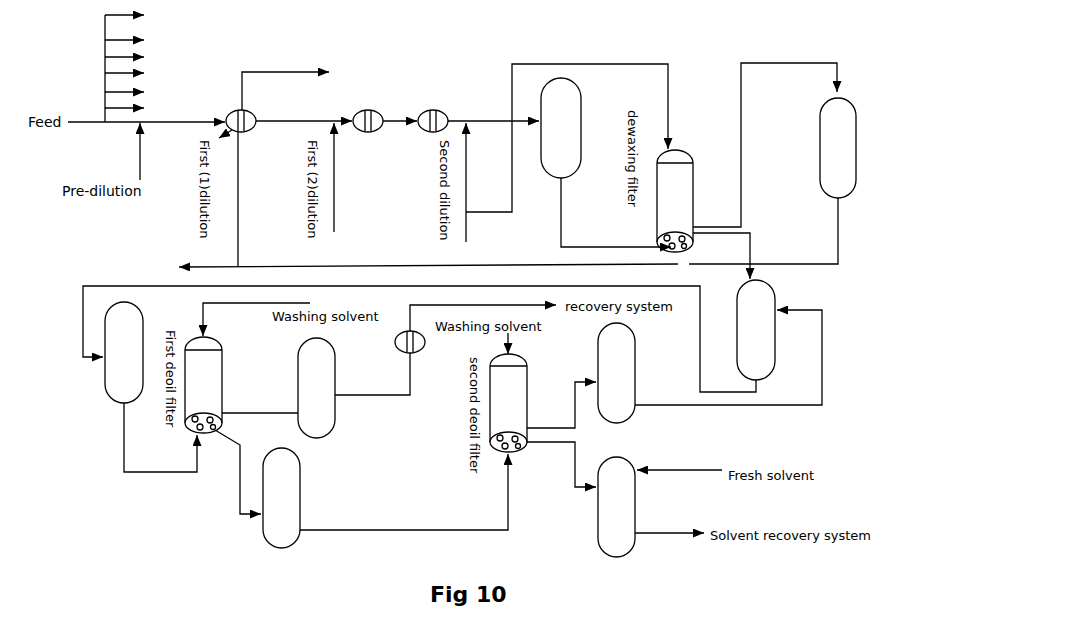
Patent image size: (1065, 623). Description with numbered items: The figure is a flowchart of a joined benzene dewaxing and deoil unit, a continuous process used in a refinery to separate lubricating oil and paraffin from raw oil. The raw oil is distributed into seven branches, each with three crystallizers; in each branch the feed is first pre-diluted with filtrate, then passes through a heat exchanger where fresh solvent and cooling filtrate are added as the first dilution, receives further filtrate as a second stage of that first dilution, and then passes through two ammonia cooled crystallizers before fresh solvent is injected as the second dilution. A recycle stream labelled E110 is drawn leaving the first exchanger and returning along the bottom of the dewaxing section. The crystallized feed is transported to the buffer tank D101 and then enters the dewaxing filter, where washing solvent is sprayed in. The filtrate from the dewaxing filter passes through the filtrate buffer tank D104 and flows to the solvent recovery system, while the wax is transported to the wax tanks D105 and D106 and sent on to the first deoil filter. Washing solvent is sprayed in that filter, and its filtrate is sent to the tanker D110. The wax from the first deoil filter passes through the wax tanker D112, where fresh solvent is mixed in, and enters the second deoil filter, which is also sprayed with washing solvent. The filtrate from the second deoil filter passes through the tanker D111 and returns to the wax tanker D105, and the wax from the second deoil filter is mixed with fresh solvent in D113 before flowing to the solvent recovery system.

The heat exchanger / recycle stream E110 is at (482, 173).
The buffer tank D101 is at (561, 128).
The filtrate buffer tank D104 is at (838, 148).
The wax tank D105 is at (756, 330).
The wax tank D106 is at (124, 352).
The tanker D110 is at (316, 388).
The tanker D111 is at (616, 373).
The wax tanker D112 is at (281, 498).
The tanker D113 is at (616, 507).